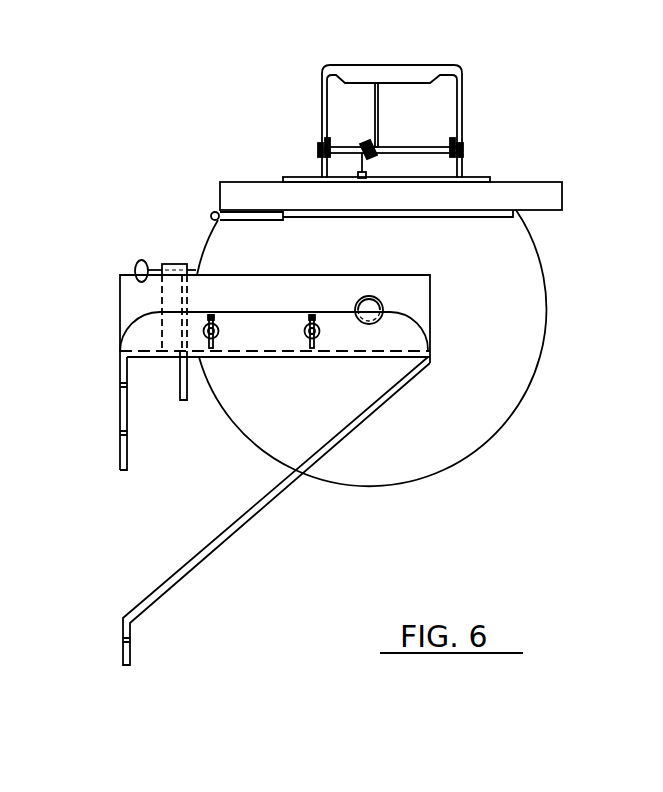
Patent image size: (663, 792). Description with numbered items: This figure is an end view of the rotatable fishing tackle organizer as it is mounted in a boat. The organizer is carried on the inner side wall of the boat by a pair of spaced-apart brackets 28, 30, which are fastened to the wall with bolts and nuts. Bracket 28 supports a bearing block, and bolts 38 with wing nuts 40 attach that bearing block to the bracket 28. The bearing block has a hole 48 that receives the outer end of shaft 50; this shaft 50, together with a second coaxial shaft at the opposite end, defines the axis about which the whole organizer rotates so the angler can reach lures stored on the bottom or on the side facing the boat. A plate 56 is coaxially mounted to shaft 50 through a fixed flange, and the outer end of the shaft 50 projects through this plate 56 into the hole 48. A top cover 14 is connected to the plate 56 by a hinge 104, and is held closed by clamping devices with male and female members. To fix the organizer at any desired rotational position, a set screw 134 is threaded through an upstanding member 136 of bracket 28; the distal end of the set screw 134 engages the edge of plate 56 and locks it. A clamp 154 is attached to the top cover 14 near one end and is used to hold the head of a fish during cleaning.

The top cover 14 is at (514, 181).
The bracket 28 is at (233, 538).
The bracket 30 is at (126, 304).
The bolts 38 is at (219, 336).
The wing nuts 40 is at (219, 327).
The hole 48 is at (382, 295).
The shaft 50 is at (369, 294).
The plate 56 is at (480, 449).
The hinge 104 is at (244, 224).
The set screw 134 is at (132, 265).
The upstanding member 136 is at (172, 261).
The clamp 154 is at (463, 64).